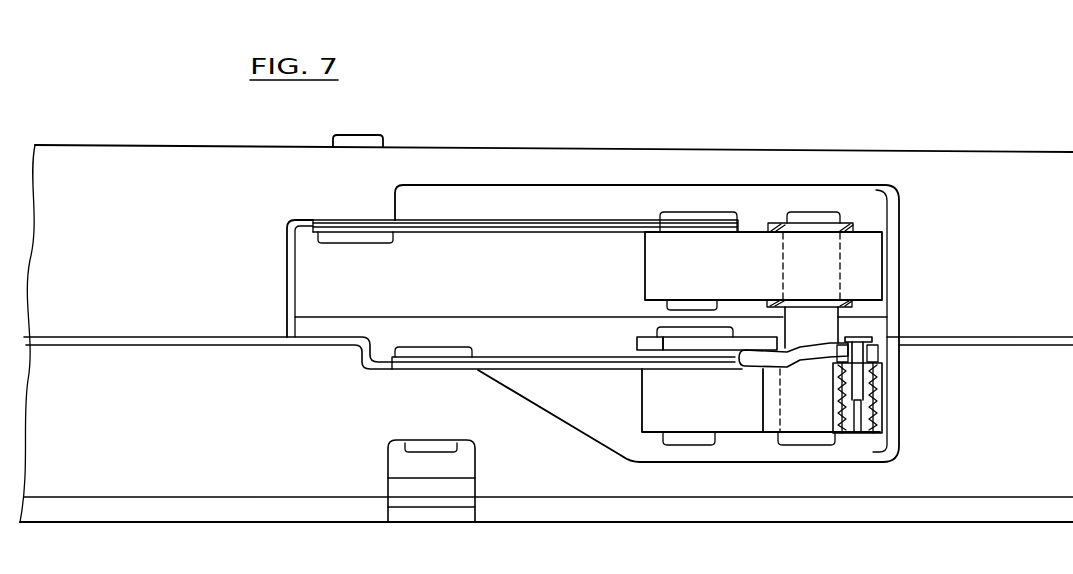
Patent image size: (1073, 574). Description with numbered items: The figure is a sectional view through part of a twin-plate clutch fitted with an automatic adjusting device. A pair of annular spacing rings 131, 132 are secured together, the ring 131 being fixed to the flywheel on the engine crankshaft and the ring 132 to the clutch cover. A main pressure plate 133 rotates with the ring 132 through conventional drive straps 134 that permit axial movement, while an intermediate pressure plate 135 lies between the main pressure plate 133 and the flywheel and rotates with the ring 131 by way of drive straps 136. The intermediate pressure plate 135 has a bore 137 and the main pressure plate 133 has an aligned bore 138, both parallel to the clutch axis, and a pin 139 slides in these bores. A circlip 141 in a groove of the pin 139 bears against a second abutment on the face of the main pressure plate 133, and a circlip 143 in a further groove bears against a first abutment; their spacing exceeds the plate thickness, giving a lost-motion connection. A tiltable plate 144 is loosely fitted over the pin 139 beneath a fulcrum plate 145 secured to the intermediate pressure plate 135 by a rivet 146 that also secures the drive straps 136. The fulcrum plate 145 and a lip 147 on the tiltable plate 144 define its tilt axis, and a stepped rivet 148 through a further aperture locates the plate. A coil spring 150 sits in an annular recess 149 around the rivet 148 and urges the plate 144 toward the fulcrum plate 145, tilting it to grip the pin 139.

The annular spacing ring 131 is at (1002, 522).
The annular spacing ring 132 is at (993, 152).
The main pressure plate 133 is at (750, 232).
The drive straps 134 is at (548, 222).
The intermediate pressure plate 135 is at (745, 433).
The drive straps 136 is at (587, 370).
The bore 137 is at (837, 403).
The bore 138 is at (845, 252).
The pin 139 is at (830, 212).
The circlip 141 is at (777, 223).
The circlip 143 is at (850, 300).
The tiltable plate 144 is at (765, 434).
The fulcrum plate 145 is at (645, 337).
The rivet 146 is at (675, 337).
The lip 147 is at (750, 348).
The stepped rivet 148 is at (853, 338).
The annular recess 149 is at (878, 363).
The coil spring 150 is at (888, 390).